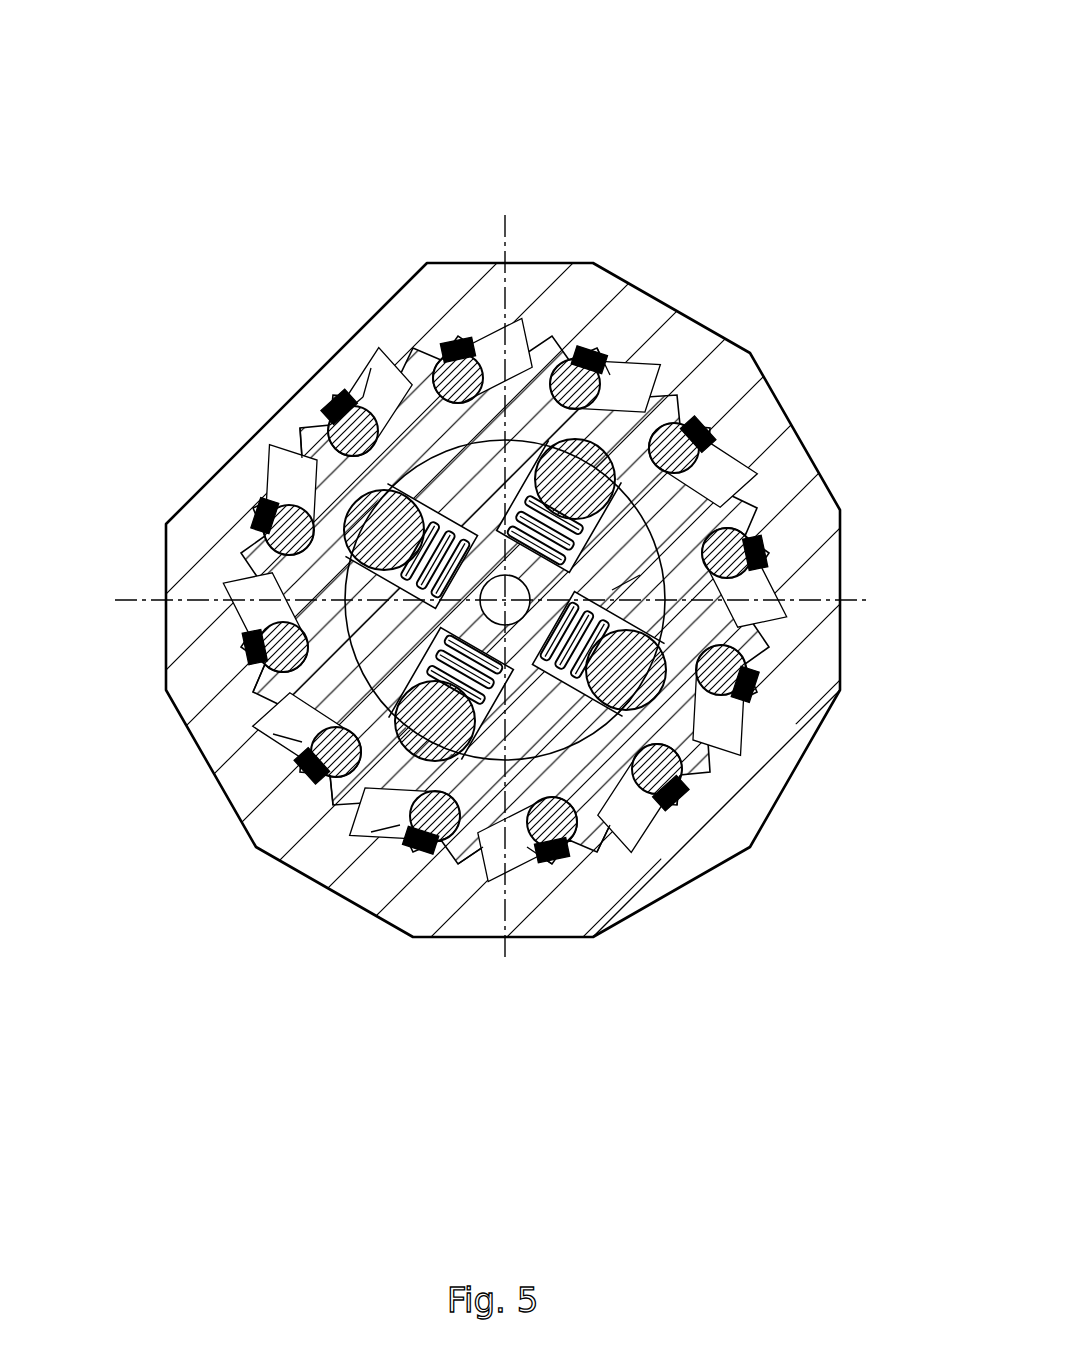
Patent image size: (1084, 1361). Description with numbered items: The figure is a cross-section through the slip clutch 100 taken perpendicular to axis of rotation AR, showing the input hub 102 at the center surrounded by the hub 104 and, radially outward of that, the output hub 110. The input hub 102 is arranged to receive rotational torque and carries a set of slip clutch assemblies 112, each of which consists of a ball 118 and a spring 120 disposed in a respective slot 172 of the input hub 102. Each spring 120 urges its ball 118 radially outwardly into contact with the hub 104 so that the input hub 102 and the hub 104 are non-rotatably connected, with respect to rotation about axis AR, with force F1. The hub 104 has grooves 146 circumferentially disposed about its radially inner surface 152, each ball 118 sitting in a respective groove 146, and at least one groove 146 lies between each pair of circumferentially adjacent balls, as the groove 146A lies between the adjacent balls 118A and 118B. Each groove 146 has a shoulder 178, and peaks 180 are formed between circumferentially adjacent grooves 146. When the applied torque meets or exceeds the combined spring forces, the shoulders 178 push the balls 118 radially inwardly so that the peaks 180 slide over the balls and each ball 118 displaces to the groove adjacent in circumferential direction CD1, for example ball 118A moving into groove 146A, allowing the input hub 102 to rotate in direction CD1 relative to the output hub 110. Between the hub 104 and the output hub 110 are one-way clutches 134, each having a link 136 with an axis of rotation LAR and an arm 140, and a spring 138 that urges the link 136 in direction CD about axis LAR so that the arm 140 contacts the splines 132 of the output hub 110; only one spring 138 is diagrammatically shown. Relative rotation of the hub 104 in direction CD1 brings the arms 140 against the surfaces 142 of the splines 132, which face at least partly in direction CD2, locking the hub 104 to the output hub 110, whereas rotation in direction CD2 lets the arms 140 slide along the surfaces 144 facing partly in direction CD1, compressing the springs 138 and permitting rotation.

The slip clutch 100 is at (775, 182).
The input hub 102 is at (343, 588).
The hub 104 is at (262, 705).
The output hub 110 is at (205, 463).
The slip clutch assembly 112 is at (640, 800).
The ball 118 is at (590, 348).
The ball 118A is at (645, 685).
The ball 118B is at (405, 785).
The spring 120 is at (760, 430).
The spline 132 is at (245, 624).
The one-way clutch 134 is at (350, 380).
The link 136 is at (322, 408).
The spring 138 is at (381, 373).
The arm 140 is at (574, 356).
The surface 142 is at (323, 770).
The surface 144 is at (375, 775).
The groove 146 is at (488, 775).
The groove 146A is at (615, 830).
The radially inner surface 152 is at (522, 780).
The slot 172 is at (650, 652).
The shoulder 178 is at (612, 590).
The peak 180 is at (602, 528).
The axis of rotation AR is at (578, 700).
The force F1 is at (398, 520).
The direction CD is at (368, 405).
The axis of rotation LAR is at (430, 412).
The circumferential direction CD1 is at (548, 42).
The circumferential direction CD2 is at (418, 70).